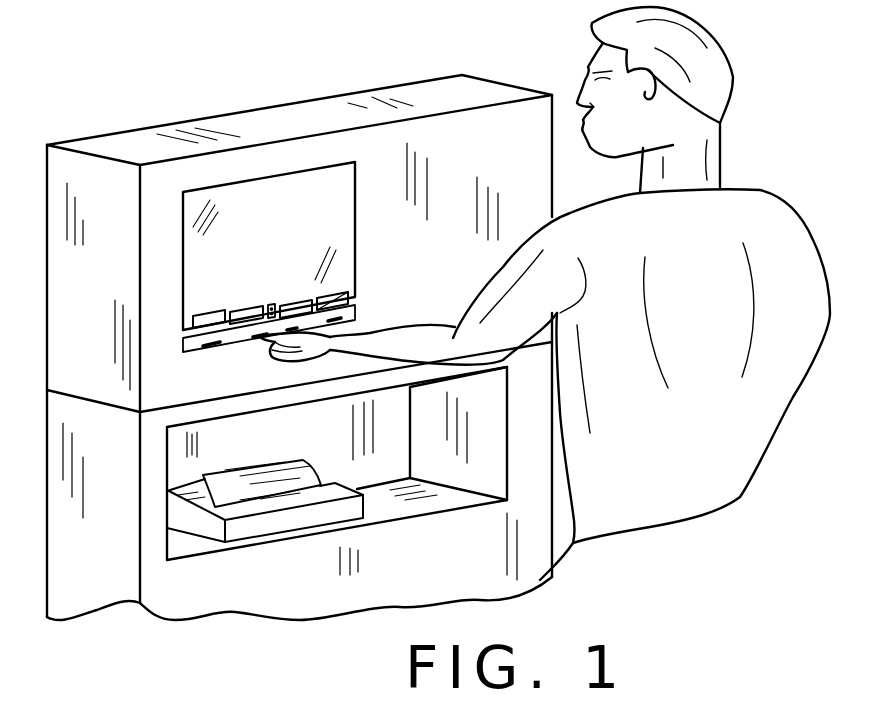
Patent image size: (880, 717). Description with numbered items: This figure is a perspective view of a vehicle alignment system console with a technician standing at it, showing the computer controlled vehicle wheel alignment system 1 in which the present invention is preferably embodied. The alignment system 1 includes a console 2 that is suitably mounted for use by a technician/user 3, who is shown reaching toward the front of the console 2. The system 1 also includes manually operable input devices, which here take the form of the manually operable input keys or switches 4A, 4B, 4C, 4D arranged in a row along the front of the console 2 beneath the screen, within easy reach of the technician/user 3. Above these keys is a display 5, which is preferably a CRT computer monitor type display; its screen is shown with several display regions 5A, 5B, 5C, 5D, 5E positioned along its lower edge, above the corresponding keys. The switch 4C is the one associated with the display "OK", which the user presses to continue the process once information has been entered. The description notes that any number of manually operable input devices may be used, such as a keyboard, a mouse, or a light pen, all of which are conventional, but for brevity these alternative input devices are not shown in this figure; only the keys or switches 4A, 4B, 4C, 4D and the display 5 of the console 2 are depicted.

The computer controlled vehicle wheel alignment system 1 is at (188, 55).
The console 2 is at (400, 78).
The technician/user 3 is at (718, 37).
The manually operable input key or switch 4A is at (190, 354).
The manually operable input key or switch 4B is at (262, 337).
The manually operable input key or switch 4C is at (331, 303).
The manually operable input key or switch 4D is at (352, 311).
The display 5 is at (261, 211).
The display button area 5A is at (204, 313).
The display button area 5B is at (250, 309).
The display button area 5C is at (287, 302).
The display button area 5D is at (331, 293).
The display indicator 5E is at (270, 304).